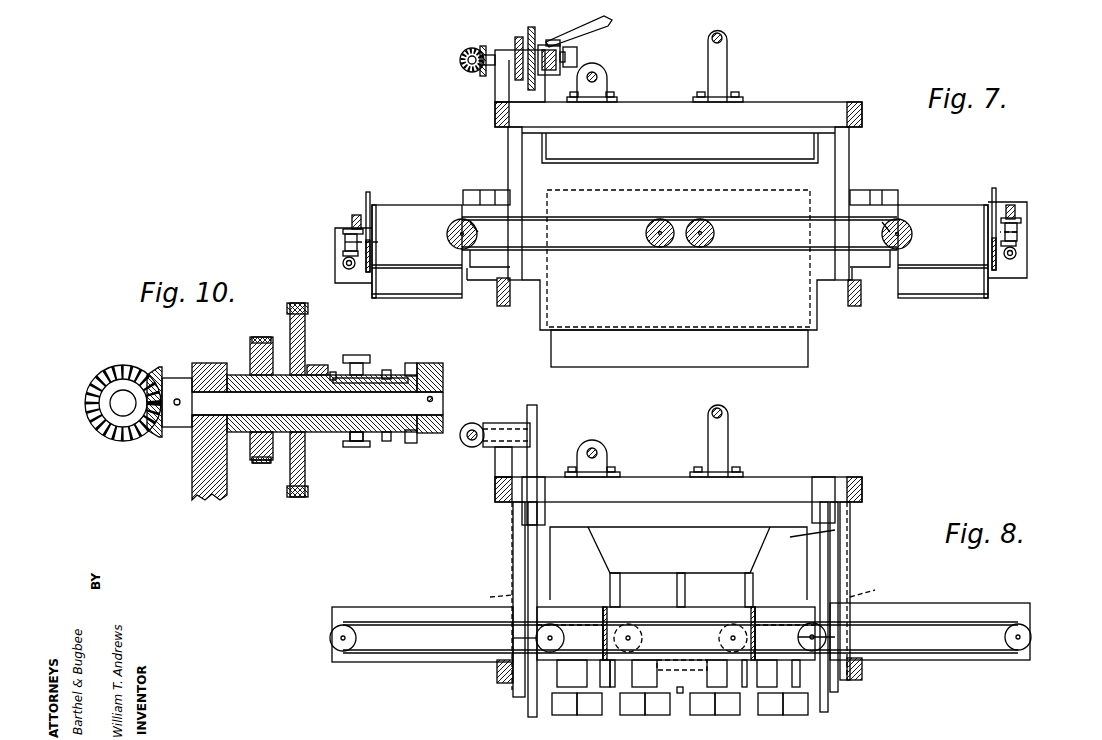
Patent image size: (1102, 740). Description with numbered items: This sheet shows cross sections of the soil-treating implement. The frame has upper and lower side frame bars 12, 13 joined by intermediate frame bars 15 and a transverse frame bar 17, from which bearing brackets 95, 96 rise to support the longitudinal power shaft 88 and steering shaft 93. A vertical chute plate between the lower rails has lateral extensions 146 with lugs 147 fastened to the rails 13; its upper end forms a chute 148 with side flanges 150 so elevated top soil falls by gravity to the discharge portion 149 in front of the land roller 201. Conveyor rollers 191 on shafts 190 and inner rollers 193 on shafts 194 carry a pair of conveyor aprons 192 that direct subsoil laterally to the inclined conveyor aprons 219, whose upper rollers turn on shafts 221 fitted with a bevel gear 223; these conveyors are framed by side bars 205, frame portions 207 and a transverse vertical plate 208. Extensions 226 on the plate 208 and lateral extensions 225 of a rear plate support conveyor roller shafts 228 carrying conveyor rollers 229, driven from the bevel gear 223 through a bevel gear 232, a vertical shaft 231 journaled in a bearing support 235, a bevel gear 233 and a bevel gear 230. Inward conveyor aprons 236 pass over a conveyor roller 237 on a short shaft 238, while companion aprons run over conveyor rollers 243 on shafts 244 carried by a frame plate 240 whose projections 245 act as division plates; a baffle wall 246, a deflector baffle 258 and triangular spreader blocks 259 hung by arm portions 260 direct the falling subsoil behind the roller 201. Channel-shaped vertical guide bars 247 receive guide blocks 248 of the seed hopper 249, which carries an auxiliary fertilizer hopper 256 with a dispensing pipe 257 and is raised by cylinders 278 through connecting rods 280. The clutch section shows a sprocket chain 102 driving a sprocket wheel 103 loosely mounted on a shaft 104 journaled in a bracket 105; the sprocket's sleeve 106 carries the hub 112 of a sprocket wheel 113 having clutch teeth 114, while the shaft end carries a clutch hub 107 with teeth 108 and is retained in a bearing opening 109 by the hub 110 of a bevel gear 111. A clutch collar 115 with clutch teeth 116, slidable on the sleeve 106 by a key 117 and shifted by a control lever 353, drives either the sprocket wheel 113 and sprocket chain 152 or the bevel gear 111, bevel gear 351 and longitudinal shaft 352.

In FIG. 7, the upper frame bar 12 is at (495, 112).
In FIG. 8, the upper frame bar 12 is at (495, 491).
In FIG. 7, the lower frame bar 13 is at (497, 300).
In FIG. 8, the lower frame bar 13 is at (497, 675).
In FIG. 7, the intermediate frame bar 15 is at (508, 146).
In FIG. 7, the transverse frame bar 17 is at (796, 102).
In FIG. 8, the transverse frame bar 17 is at (786, 477).
In FIG. 7, the power shaft 88 is at (596, 72).
In FIG. 8, the power shaft 88 is at (594, 448).
In FIG. 7, the steering shaft 93 is at (717, 32).
In FIG. 8, the steering shaft 93 is at (717, 408).
In FIG. 7, the bearing bracket 95 is at (607, 78).
In FIG. 8, the bearing bracket 95 is at (607, 455).
In FIG. 7, the bearing bracket 96 is at (708, 64).
In FIG. 8, the bearing bracket 96 is at (728, 435).
In FIG. 10, the sprocket chain 102 is at (273, 463).
In FIG. 7, the sprocket wheel 103 is at (516, 40).
In FIG. 10, the sprocket wheel 103 is at (261, 337).
In FIG. 10, the shaft 104 is at (317, 403).
In FIG. 7, the bracket 105 is at (502, 86).
In FIG. 10, the bracket 105 is at (200, 482).
In FIG. 10, the sleeve 106 is at (245, 432).
In FIG. 7, the clutch hub 107 is at (580, 46).
In FIG. 10, the clutch hub 107 is at (430, 363).
In FIG. 10, the clutch teeth 108 is at (412, 363).
In FIG. 10, the bearing opening 109 is at (210, 363).
In FIG. 7, the hub of bevel gear 110 is at (485, 50).
In FIG. 10, the hub of bevel gear 110 is at (176, 378).
In FIG. 7, the bevel gear 111 is at (481, 46).
In FIG. 10, the bevel gear 111 is at (152, 370).
In FIG. 10, the hub of sprocket wheel 112 is at (316, 365).
In FIG. 7, the sprocket wheel 113 is at (531, 27).
In FIG. 10, the sprocket wheel 113 is at (296, 303).
In FIG. 10, the clutch teeth 114 is at (333, 372).
In FIG. 7, the clutch collar 115 is at (552, 75).
In FIG. 10, the clutch collar 115 is at (365, 441).
In FIG. 10, the clutch teeth 116 is at (385, 370).
In FIG. 10, the key 117 is at (398, 378).
In FIG. 7, the lateral extension 146 is at (484, 192).
In FIG. 7, the lug 147 is at (478, 288).
In FIG. 7, the chute 148 is at (678, 160).
In FIG. 7, the discharge portion 149 is at (686, 330).
In FIG. 7, the flange 150 is at (548, 143).
In FIG. 10, the sprocket chain 152 is at (292, 497).
In FIG. 8, the sprocket chain 152 is at (537, 451).
In FIG. 7, the conveyor roller supporting shaft 190 is at (447, 235).
In FIG. 7, the conveyor roller 191 is at (472, 235).
In FIG. 7, the conveyor apron 192 is at (592, 217).
In FIG. 7, the conveyor roller 193 is at (660, 247).
In FIG. 7, the conveyor roller supporting shaft 194 is at (646, 233).
In FIG. 7, the land roller 201 is at (742, 360).
In FIG. 7, the side bar 205 is at (367, 193).
In FIG. 7, the frame portion 207 is at (463, 197).
In FIG. 7, the transverse vertical plate 208 is at (482, 192).
In FIG. 7, the conveyor apron 219 is at (400, 268).
In FIG. 7, the shaft 221 is at (374, 208).
In FIG. 7, the bevel gear 223 is at (354, 216).
In FIG. 7, the extension 226 is at (350, 283).
In FIG. 7, the bevel gear 230 is at (343, 264).
In FIG. 7, the vertical shaft 231 is at (378, 242).
In FIG. 7, the bevel gear 232 is at (344, 226).
In FIG. 7, the bevel gear 233 is at (343, 254).
In FIG. 7, the bearing support 235 is at (345, 241).
In FIG. 8, the lateral extension 225 is at (443, 607).
In FIG. 8, the conveyor roller shaft 228 is at (330, 640).
In FIG. 8, the conveyor roller 229 is at (346, 639).
In FIG. 8, the conveyor apron 236 is at (410, 622).
In FIG. 8, the conveyor roller 237 is at (513, 641).
In FIG. 8, the short shaft 238 is at (552, 624).
In FIG. 8, the frame plate 240 is at (690, 615).
In FIG. 8, the conveyor roller 243 is at (635, 625).
In FIG. 8, the shaft 244 is at (630, 637).
In FIG. 8, the projection 245 is at (587, 610).
In FIG. 8, the baffle wall 246 is at (565, 712).
In FIG. 8, the vertical guide bar 247 is at (513, 542).
In FIG. 8, the guide block 248 is at (866, 576).
In FIG. 8, the seed hopper 249 is at (837, 531).
In FIG. 8, the auxiliary hopper 256 is at (764, 546).
In FIG. 8, the dispensing pipe 257 is at (620, 580).
In FIG. 8, the deflector baffle 258 is at (680, 700).
In FIG. 8, the spreader block 259 is at (595, 710).
In FIG. 8, the arm portion 260 is at (682, 669).
In FIG. 8, the cylinder 278 is at (545, 515).
In FIG. 8, the connecting rod 280 is at (528, 553).
In FIG. 7, the bevel gear 351 is at (461, 55).
In FIG. 10, the bevel gear 351 is at (104, 378).
In FIG. 7, the shaft 352 is at (468, 61).
In FIG. 10, the shaft 352 is at (116, 406).
In FIG. 8, the shaft 352 is at (470, 430).
In FIG. 7, the control lever 353 is at (582, 30).
In FIG. 10, the control lever 353 is at (356, 355).